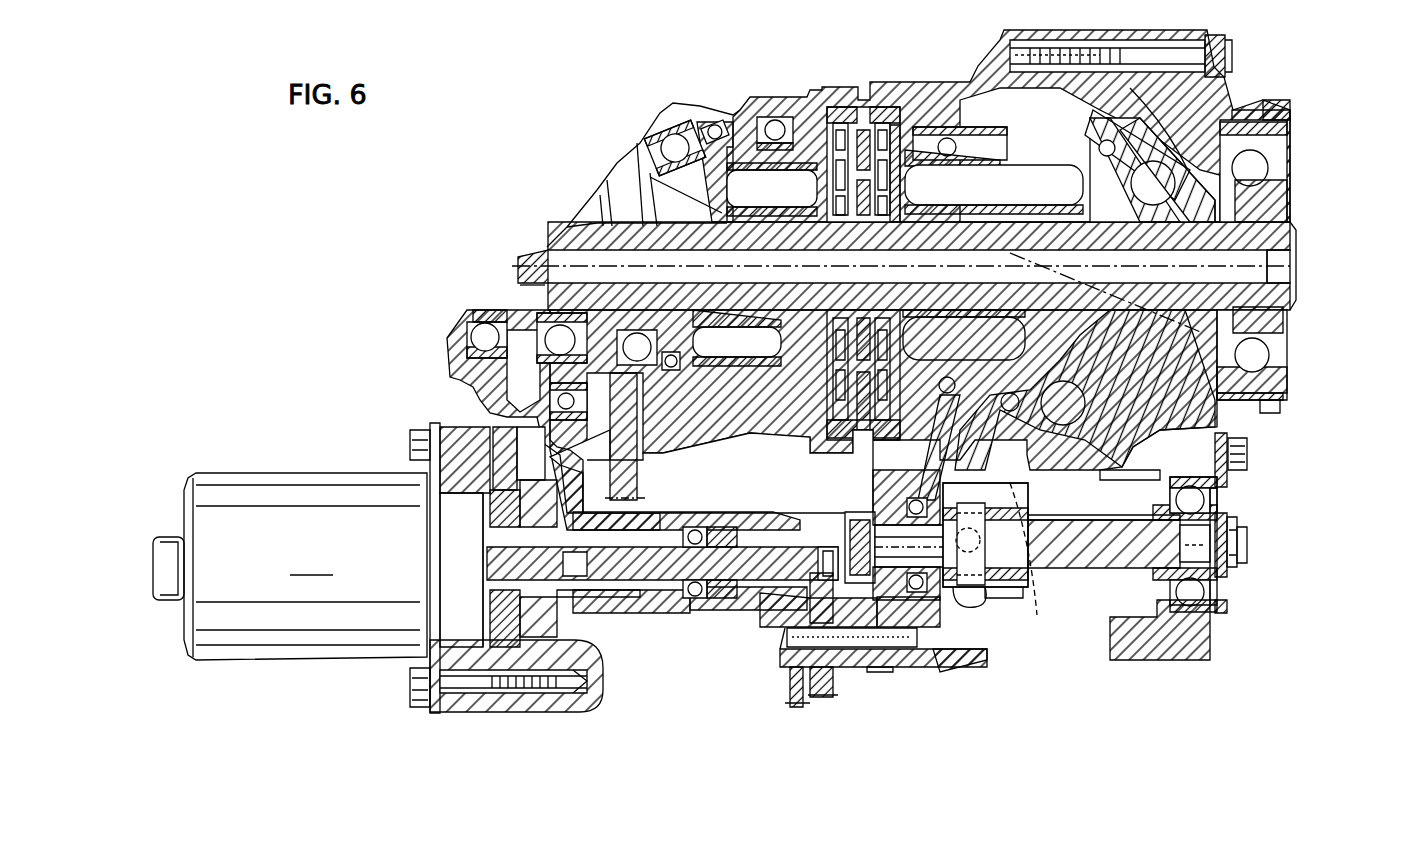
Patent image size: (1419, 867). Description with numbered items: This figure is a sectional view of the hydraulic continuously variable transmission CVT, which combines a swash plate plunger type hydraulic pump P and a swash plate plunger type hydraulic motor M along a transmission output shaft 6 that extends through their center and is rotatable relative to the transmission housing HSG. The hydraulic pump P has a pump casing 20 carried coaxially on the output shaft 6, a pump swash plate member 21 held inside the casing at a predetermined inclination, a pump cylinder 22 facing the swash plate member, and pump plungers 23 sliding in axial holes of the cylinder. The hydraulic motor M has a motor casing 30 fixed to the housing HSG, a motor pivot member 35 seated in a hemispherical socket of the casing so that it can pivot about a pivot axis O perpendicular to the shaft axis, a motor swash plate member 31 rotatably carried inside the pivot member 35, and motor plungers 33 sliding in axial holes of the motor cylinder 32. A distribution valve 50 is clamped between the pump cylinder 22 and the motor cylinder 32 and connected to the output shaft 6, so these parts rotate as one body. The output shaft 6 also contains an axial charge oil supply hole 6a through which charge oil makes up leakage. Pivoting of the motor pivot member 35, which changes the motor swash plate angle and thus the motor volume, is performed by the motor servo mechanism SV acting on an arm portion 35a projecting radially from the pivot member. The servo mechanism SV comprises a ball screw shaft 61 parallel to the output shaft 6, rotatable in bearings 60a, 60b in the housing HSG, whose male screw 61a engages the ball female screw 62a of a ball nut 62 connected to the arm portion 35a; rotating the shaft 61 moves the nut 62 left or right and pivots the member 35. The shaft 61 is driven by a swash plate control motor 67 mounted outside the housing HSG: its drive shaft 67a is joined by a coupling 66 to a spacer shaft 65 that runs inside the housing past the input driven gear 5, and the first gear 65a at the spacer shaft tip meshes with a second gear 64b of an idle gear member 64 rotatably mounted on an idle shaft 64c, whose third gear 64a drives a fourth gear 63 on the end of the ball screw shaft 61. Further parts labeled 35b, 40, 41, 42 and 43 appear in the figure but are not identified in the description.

The hydraulic motor M is at (950, 72).
The hydraulic pump P is at (703, 95).
The hydraulic continuously variable transmission CVT is at (1258, 58).
The motor servo mechanism SV is at (385, 400).
The transmission housing HSG is at (675, 612).
The pivot axis O is at (1030, 264).
The input driven gear 5 is at (640, 480).
The transmission output shaft 6 is at (1288, 238).
The charge oil supply hole 6a is at (547, 255).
The pump casing 20 is at (788, 97).
The pump swash plate member 21 is at (700, 192).
The pump cylinder 22 is at (811, 97).
The pump plungers 23 is at (717, 350).
The motor casing 30 is at (1050, 42).
The motor swash plate member 31 is at (1045, 345).
The motor cylinder 32 is at (982, 165).
The motor plungers 33 is at (1050, 180).
The motor pivot member 35 is at (1066, 292).
The arm portion 35a is at (1000, 470).
The carrier bore 35b is at (1249, 266).
The bearing 40 is at (1286, 253).
The inner race 41 is at (1285, 212).
The outer race 42 is at (1290, 128).
The ball 43 is at (1258, 170).
The distribution valve 50 is at (866, 82).
The bearing 60a is at (1215, 496).
The bearing 60b is at (905, 485).
The ball screw shaft 61 is at (1095, 565).
The male screw 61a is at (1100, 525).
The ball nut 62 is at (1002, 600).
The ball female screw 62a is at (1039, 574).
The fourth gear 63 is at (880, 498).
The idle gear member 64 is at (869, 655).
The third gear 64a is at (893, 670).
The second gear 64b is at (823, 700).
The idle shaft 64c is at (800, 652).
The spacer shaft 65 is at (745, 540).
The first gear 65a is at (815, 548).
The coupling 66 is at (612, 605).
The swash plate control motor 67 is at (355, 568).
The drive shaft 67a is at (595, 640).